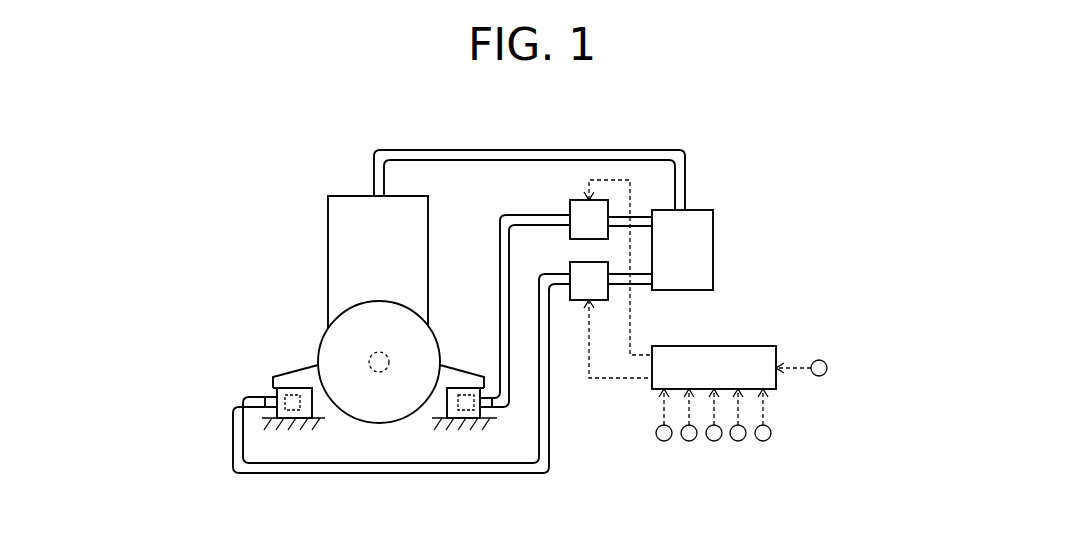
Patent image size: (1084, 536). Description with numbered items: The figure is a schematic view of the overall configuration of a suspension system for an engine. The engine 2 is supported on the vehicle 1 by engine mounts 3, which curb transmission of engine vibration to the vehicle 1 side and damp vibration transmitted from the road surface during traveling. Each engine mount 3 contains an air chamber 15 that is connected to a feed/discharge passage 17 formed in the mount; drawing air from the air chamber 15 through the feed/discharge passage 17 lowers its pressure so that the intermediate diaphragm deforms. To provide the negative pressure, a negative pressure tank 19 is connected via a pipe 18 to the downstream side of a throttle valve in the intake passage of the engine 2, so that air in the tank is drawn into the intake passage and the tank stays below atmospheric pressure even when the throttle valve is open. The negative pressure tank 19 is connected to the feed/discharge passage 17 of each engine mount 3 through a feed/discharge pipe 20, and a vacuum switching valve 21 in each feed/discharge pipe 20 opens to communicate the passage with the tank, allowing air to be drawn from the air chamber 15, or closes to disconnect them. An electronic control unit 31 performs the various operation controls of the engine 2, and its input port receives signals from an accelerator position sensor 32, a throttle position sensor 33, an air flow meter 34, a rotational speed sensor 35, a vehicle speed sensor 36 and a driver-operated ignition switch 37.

The vehicle 1 is at (432, 415).
The engine 2 is at (328, 211).
The engine mount 3 is at (305, 388).
The air chamber 15 is at (292, 418).
The feed/discharge passage 17 is at (277, 397).
The pipe 18 is at (540, 150).
The negative pressure tank 19 is at (713, 210).
The feed/discharge pipe 20 is at (500, 218).
The vacuum switching valve 21 is at (585, 197).
The electronic control unit 31 is at (750, 346).
The accelerator position sensor 32 is at (664, 441).
The throttle position sensor 33 is at (689, 441).
The air flow meter 34 is at (714, 441).
The rotational speed sensor 35 is at (738, 441).
The vehicle speed sensor 36 is at (763, 441).
The ignition switch 37 is at (819, 360).